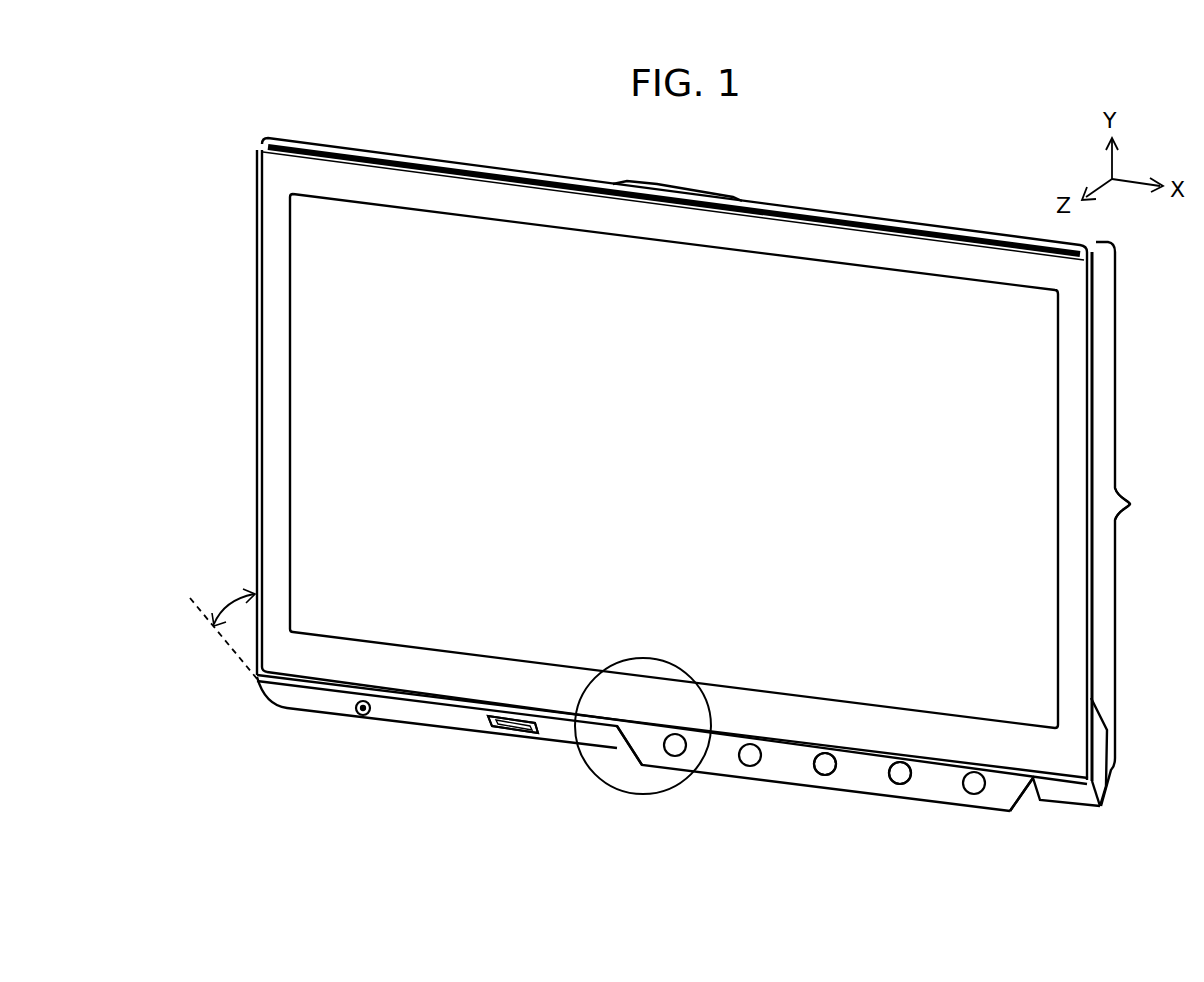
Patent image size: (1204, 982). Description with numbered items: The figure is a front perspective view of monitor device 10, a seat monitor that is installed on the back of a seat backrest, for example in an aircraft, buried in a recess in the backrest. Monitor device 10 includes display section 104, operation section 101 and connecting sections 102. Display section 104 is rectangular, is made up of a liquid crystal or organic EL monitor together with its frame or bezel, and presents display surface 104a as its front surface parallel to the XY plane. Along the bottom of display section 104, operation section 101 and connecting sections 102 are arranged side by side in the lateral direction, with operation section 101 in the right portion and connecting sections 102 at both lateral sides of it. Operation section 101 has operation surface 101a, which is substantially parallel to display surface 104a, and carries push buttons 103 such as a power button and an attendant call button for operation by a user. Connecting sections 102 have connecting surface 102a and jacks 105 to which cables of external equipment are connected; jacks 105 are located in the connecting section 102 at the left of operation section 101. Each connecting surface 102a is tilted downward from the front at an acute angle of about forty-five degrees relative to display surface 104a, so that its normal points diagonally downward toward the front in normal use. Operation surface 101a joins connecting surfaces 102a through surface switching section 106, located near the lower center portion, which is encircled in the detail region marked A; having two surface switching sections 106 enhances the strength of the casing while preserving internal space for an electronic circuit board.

The monitor device 10 is at (890, 186).
The display surface 104a is at (318, 347).
The display section 104 is at (1146, 504).
The jacks 105 is at (487, 731).
The connecting sections 102 is at (550, 730).
The connecting surface 102a is at (513, 724).
The surface switching section 106 is at (627, 753).
The detail region A is at (679, 773).
The operation section 101 is at (786, 768).
The operation surface 101a is at (825, 764).
The push buttons 103 is at (900, 775).